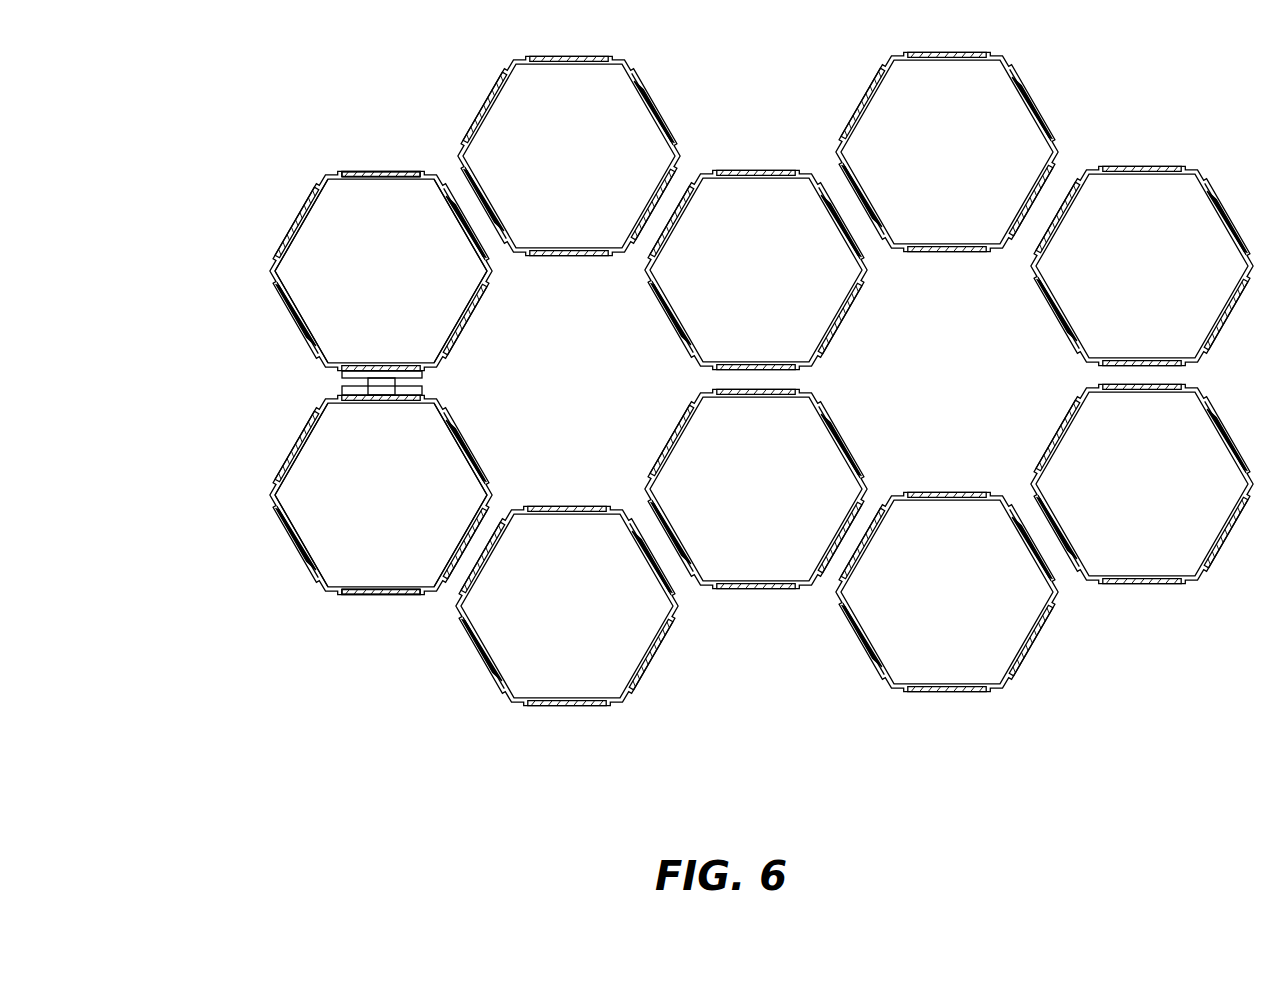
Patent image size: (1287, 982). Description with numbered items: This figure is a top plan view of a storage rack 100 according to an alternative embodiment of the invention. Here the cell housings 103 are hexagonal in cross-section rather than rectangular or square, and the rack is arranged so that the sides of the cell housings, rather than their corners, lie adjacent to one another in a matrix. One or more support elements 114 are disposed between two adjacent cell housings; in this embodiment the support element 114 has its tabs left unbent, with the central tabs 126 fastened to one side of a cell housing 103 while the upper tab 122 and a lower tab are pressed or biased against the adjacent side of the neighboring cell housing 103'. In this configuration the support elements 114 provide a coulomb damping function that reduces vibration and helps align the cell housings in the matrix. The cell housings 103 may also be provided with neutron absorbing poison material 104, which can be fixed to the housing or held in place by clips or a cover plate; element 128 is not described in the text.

The storage rack 100 is at (338, 134).
The cell housing 103 is at (351, 622).
The adjacent cell housing 103' is at (387, 141).
The poison material 104 is at (300, 330).
The support element 114 is at (393, 397).
The upper tab 122 is at (343, 375).
The central tabs 126 is at (343, 393).
The spacer block 128 is at (383, 390).